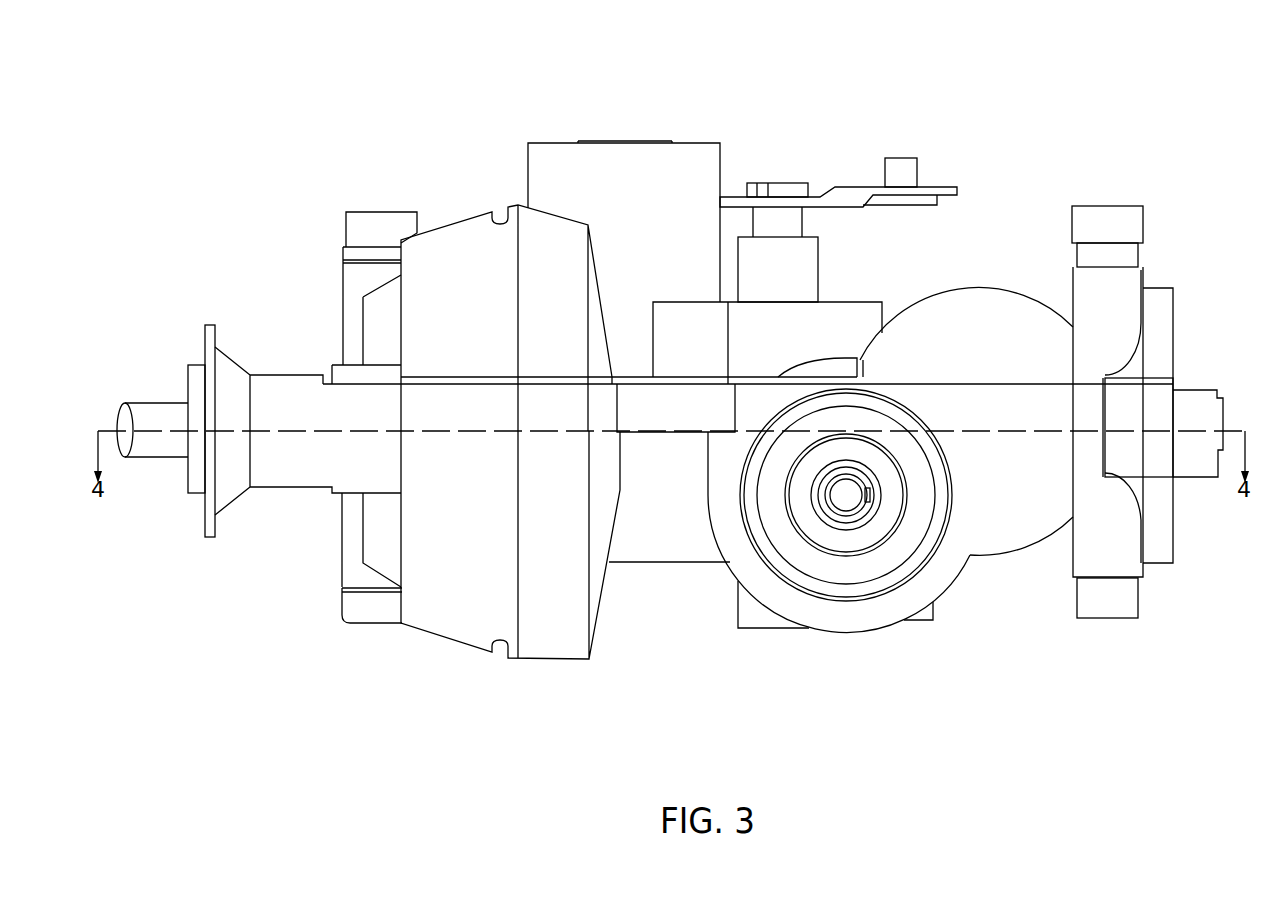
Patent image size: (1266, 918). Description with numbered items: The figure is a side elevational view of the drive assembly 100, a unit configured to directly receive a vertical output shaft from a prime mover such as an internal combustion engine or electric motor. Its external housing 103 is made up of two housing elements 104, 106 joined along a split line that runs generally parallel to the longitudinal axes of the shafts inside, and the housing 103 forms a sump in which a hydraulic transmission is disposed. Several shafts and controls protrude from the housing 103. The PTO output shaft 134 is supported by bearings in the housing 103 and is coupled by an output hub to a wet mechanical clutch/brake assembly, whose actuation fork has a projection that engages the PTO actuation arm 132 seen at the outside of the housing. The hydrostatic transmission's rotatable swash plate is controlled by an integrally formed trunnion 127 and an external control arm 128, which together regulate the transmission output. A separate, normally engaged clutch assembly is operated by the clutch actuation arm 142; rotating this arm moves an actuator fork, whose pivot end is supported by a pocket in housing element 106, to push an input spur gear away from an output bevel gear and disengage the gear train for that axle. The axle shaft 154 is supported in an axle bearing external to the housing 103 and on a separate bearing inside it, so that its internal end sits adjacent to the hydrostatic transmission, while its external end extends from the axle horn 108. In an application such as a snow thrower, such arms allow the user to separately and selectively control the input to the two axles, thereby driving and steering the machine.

The drive assembly 100 is at (241, 98).
The external housing 103 is at (699, 651).
The housing element 104 is at (482, 313).
The housing element 106 is at (482, 529).
The axle horn 108 is at (867, 577).
The trunnion 127 is at (805, 221).
The external control arm 128 is at (950, 185).
The PTO actuation arm 132 is at (1107, 206).
The PTO output shaft 134 is at (158, 402).
The clutch actuation arm 142 is at (380, 212).
The axle shaft 154 is at (847, 495).